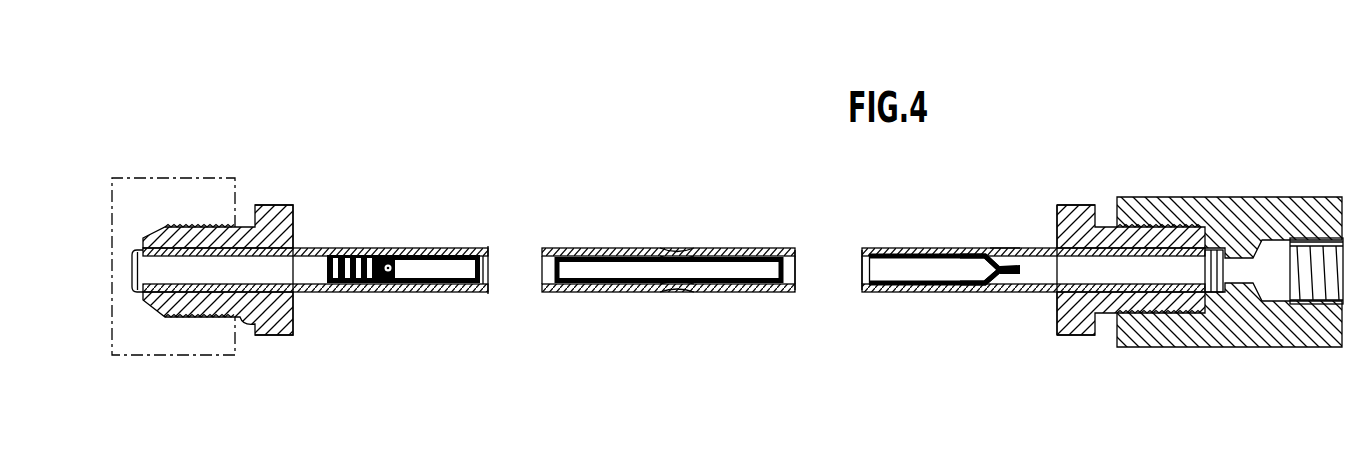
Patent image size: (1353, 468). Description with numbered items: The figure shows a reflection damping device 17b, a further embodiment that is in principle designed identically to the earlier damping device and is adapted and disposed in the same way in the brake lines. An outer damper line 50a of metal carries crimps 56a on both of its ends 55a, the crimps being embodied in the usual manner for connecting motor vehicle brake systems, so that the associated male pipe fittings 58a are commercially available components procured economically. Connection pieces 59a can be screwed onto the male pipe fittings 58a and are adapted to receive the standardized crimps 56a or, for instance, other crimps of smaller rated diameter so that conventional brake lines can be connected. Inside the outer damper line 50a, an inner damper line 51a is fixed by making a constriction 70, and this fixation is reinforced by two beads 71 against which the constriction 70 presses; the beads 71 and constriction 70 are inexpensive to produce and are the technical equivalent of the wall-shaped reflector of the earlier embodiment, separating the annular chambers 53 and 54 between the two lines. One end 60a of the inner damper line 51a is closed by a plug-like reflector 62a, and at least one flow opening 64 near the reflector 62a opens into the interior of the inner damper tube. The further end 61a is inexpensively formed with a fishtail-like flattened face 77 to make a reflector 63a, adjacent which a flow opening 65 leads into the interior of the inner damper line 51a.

The reflection damping device 17b is at (760, 187).
The outer damper line 50a is at (425, 242).
The inner damper line 51a is at (790, 257).
The chamber 53 is at (492, 252).
The chamber 54 is at (862, 262).
The end of outer damper line 55a is at (178, 250).
The crimp 56a is at (138, 250).
The male pipe fitting 58a is at (277, 207).
The connection piece 59a is at (187, 340).
The end of inner damper line 60a is at (413, 292).
The further end of inner damper tube 61a is at (953, 292).
The reflector 62a is at (335, 270).
The reflector 63a is at (1006, 230).
The flow opening 64 is at (390, 252).
The flow opening 65 is at (978, 287).
The constriction 70 is at (677, 233).
The bead 71 is at (658, 293).
The fishtail-like flattened face 77 is at (1005, 290).